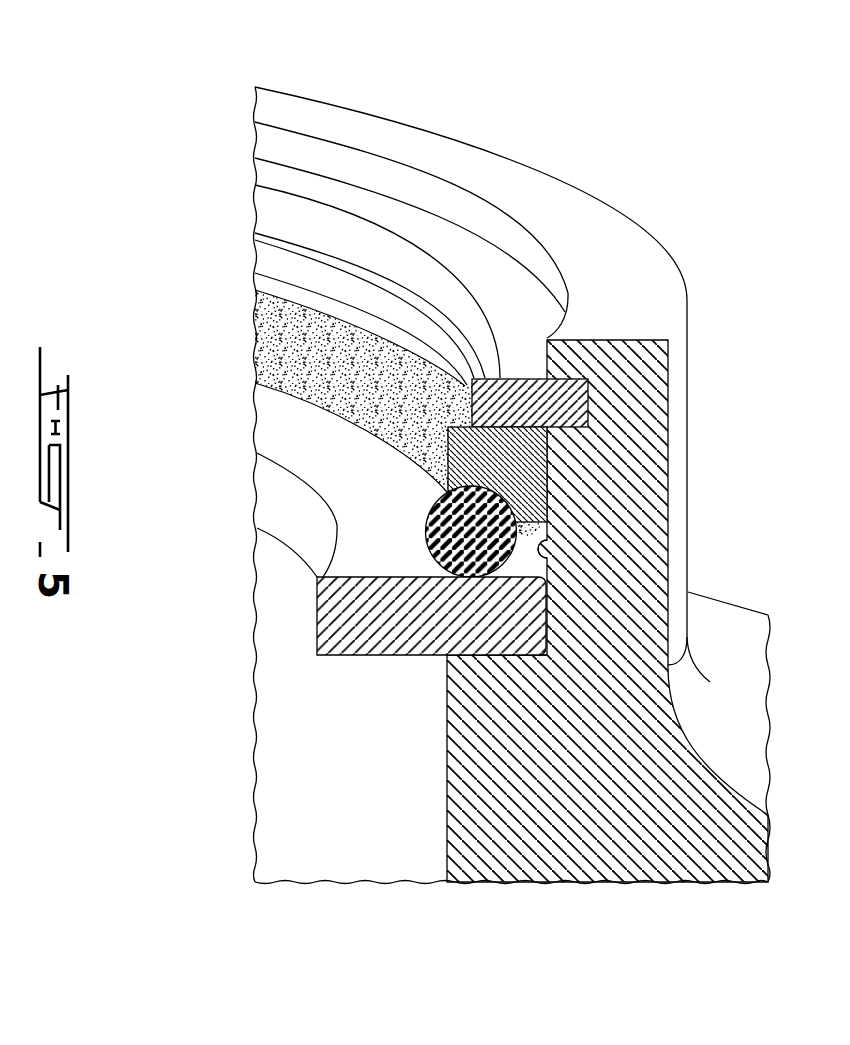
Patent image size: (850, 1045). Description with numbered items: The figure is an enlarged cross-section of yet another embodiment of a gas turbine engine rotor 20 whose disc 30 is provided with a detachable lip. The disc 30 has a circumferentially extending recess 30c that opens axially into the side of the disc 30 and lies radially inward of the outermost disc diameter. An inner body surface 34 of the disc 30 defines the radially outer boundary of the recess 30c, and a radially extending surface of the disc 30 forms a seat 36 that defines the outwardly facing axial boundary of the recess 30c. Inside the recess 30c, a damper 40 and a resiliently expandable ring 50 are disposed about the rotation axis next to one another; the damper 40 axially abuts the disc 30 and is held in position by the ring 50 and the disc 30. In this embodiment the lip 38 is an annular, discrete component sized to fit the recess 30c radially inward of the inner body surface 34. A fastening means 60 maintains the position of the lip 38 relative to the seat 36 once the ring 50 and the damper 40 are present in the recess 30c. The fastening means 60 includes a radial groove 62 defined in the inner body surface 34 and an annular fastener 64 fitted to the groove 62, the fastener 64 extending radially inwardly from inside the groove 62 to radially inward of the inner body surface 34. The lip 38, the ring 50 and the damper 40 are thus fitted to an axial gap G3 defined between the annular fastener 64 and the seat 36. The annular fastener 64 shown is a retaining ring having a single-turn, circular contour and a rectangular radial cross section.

The rotor 20 is at (810, 42).
The disc 30 is at (737, 175).
The recess 30c is at (520, 290).
The axial gap G3 is at (496, 420).
The fastening means 60 is at (778, 398).
The radial groove 62 is at (747, 331).
The lip 38 is at (732, 472).
The inner body surface 34 is at (713, 547).
The seat 36 is at (493, 912).
The annular fastener 64 is at (470, 398).
The resiliently expandable ring 50 is at (428, 510).
The damper 40 is at (315, 617).